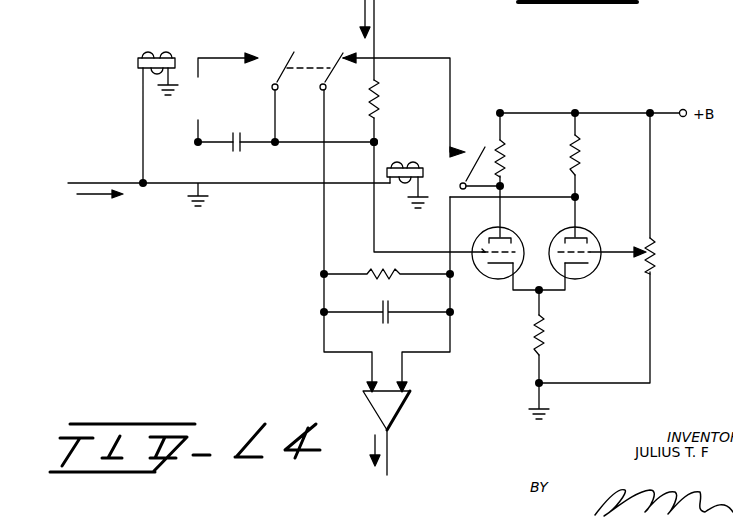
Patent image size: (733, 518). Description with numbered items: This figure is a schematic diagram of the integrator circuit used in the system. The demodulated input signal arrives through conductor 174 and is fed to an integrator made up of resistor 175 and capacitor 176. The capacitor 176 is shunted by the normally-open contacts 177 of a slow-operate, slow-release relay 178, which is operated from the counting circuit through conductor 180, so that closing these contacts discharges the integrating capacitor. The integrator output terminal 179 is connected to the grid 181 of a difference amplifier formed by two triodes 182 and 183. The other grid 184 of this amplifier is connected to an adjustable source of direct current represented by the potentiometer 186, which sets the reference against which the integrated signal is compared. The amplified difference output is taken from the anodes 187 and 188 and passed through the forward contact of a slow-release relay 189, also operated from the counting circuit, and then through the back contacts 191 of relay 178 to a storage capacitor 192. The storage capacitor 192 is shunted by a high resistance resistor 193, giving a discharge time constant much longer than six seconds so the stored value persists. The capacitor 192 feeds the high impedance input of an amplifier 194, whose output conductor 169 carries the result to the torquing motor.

The output conductor 169 is at (389, 447).
The conductor 174 is at (376, 14).
The resistor 175 is at (379, 101).
The capacitor 176 is at (242, 150).
The normally-open contacts 177 is at (290, 52).
The slow-operate, slow-release relay 178 is at (183, 127).
The integrator output terminal 179 is at (378, 142).
The conductor 180 is at (82, 183).
The grid 181 is at (489, 270).
The triode 182 is at (506, 230).
The triode 183 is at (590, 266).
The grid 184 is at (592, 251).
The potentiometer 186 is at (655, 252).
The anode 187 is at (490, 230).
The anode 188 is at (582, 230).
The slow-release relay 189 is at (404, 217).
The back contacts 191 is at (344, 57).
The storage capacitor 192 is at (390, 304).
The high resistance resistor 193 is at (382, 270).
The amplifier 194 is at (410, 400).